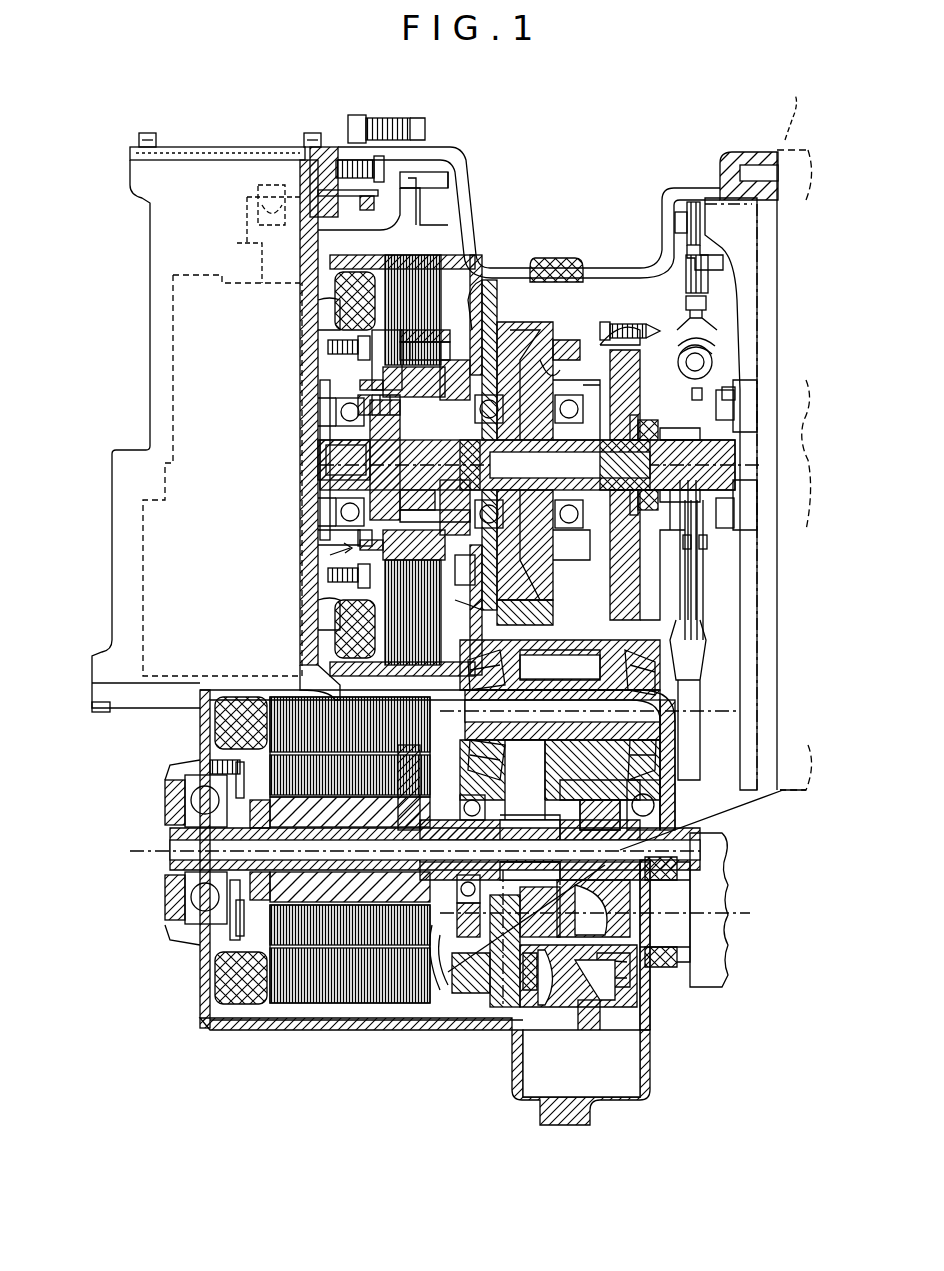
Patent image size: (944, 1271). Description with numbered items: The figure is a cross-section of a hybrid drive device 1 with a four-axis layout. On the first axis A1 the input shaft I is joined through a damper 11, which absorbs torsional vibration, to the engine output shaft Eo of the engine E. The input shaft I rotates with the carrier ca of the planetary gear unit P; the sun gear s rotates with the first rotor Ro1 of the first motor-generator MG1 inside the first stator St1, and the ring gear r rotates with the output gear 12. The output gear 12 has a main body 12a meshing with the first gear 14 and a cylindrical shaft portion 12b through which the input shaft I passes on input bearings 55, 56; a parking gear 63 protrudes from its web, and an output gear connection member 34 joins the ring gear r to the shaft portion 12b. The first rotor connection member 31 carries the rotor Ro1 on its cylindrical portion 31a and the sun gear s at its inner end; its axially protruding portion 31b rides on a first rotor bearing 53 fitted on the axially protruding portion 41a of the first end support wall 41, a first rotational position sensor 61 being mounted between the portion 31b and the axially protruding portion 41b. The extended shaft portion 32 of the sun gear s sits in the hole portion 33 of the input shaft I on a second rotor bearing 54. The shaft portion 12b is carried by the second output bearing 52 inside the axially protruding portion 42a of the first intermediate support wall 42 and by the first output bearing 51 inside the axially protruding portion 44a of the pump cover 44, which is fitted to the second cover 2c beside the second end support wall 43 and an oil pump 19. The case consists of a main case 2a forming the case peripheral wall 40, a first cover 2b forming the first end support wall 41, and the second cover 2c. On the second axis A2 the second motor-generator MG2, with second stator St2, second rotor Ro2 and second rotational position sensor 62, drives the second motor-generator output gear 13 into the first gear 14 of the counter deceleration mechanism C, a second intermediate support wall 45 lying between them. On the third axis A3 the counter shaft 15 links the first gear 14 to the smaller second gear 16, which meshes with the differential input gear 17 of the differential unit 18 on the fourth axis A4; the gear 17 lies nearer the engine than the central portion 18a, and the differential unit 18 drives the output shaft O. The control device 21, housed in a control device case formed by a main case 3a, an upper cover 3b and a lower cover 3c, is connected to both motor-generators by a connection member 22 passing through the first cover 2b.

The hybrid drive device 1 is at (178, 105).
The upper cover 3b is at (225, 147).
The main case 3a is at (135, 315).
The lower cover 3c is at (125, 715).
The control device 21 is at (200, 275).
The connection member 22 is at (322, 200).
The main case 2a is at (445, 138).
The first cover 2b is at (372, 108).
The second cover 2c is at (730, 148).
The engine E is at (794, 429).
The engine output shaft Eo is at (796, 385).
The damper 11 is at (665, 295).
The first motor-generator MG1 is at (460, 242).
The first stator St1 is at (465, 248).
The first rotor Ro1 is at (325, 315).
The first end support wall 41 is at (300, 310).
The first rotor connection member 31 is at (330, 368).
The planetary gear unit P is at (385, 400).
The axially protruding portion 31b is at (365, 410).
The first rotor bearing 53 is at (335, 405).
The carrier ca is at (359, 460).
The axially protruding portion 41a is at (338, 515).
The sun gear s is at (351, 546).
The first rotational position sensor 61 is at (318, 572).
The axially protruding portion 41b is at (335, 608).
The cylindrical portion 31a is at (452, 355).
The output gear connection member 34 is at (461, 441).
The extended shaft portion 32 is at (498, 395).
The hole portion 33 is at (434, 507).
The input bearing 55 is at (540, 465).
The second rotor bearing 54 is at (470, 468).
The input bearing 56 is at (615, 465).
The first axis A1 is at (713, 465).
The input shaft I is at (656, 435).
The oil pump 19 is at (640, 425).
The output gear 12 is at (515, 315).
The first intermediate support wall 42 is at (488, 280).
The axially protruding portion 42a is at (472, 551).
The ring gear r is at (463, 571).
The case peripheral wall 40 is at (548, 255).
The output gear main body 12a is at (540, 345).
The parking gear 63 is at (585, 375).
The axially protruding portion 44a is at (578, 385).
The second output bearing 52 is at (490, 530).
The first output bearing 51 is at (578, 530).
The cylindrical shaft portion 12b is at (547, 600).
The first gear 14 is at (545, 608).
The second end support wall 43 is at (628, 560).
The pump cover 44 is at (628, 570).
The counter deceleration mechanism C is at (596, 640).
The second gear 16 is at (560, 655).
The third axis A3 is at (720, 720).
The counter shaft 15 is at (665, 735).
The differential input gear 17 is at (658, 776).
The second motor-generator output gear 13 is at (560, 830).
The second intermediate support wall 45 is at (460, 808).
The second axis A2 is at (175, 853).
The central portion 18a is at (480, 905).
The differential unit 18 is at (458, 1004).
The output shaft O is at (722, 845).
The fourth axis A4 is at (612, 912).
The second motor-generator MG2 is at (292, 1010).
The second stator St2 is at (340, 1010).
The second rotor Ro2 is at (245, 935).
The second rotational position sensor 62 is at (232, 905).